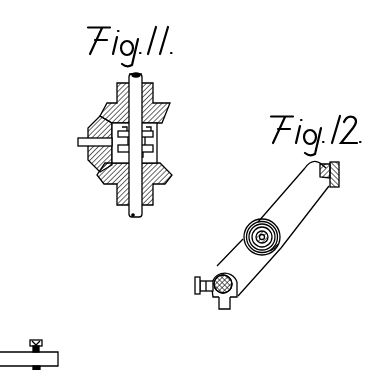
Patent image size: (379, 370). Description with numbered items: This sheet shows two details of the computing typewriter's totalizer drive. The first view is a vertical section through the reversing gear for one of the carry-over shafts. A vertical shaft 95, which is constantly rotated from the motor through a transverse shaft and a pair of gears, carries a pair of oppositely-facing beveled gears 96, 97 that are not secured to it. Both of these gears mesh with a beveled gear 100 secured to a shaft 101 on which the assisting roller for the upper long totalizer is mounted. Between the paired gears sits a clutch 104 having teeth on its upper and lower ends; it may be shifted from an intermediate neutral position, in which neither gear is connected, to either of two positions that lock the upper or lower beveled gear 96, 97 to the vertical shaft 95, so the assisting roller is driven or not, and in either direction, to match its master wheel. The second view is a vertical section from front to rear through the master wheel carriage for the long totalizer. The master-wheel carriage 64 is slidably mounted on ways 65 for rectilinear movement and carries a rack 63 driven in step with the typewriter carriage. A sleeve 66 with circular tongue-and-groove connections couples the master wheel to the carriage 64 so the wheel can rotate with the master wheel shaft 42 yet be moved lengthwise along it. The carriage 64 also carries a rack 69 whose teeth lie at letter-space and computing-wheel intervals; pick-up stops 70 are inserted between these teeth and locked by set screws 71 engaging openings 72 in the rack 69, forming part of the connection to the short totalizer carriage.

In FIG. 11, the vertical shaft 95 is at (129, 215).
In FIG. 11, the beveled gear 96 is at (160, 108).
In FIG. 11, the beveled gear 97 is at (165, 172).
In FIG. 11, the beveled gear 100 is at (104, 118).
In FIG. 11, the shaft 101 is at (90, 146).
In FIG. 11, the clutch 104 is at (157, 143).
In FIG. 12, the master wheel shaft 42 is at (272, 249).
In FIG. 12, the rack 63 is at (320, 172).
In FIG. 12, the master-wheel carriage 64 is at (296, 216).
In FIG. 12, the ways 65 is at (339, 173).
In FIG. 12, the sleeve 66 is at (245, 241).
In FIG. 12, the rack 69 is at (231, 289).
In FIG. 12, the pick-up stop 70 is at (214, 297).
In FIG. 12, the set screw 71 is at (194, 286).
In FIG. 12, the opening 72 is at (225, 309).